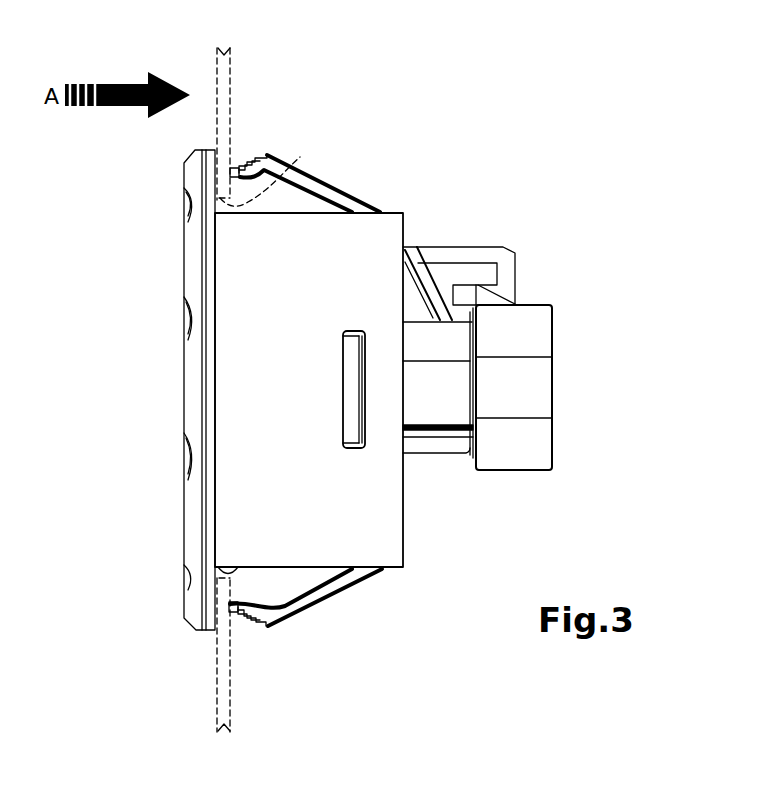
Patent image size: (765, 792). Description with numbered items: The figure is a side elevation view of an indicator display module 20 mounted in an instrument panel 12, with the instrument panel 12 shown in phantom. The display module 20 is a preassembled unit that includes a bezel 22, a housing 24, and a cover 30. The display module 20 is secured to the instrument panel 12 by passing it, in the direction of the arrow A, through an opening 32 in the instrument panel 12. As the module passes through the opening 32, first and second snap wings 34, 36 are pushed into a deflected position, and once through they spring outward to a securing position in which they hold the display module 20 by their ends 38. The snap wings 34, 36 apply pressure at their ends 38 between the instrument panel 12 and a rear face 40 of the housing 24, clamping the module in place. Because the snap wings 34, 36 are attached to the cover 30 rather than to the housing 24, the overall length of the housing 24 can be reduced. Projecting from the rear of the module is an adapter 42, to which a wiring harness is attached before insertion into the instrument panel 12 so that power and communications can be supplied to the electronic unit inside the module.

The instrument panel 12 is at (220, 86).
The indicator display module 20 is at (515, 206).
The bezel 22 is at (185, 184).
The housing 24 is at (392, 540).
The cover 30 is at (466, 476).
The opening 32 is at (300, 157).
The first snap wing 34 is at (338, 197).
The second snap wing 36 is at (327, 590).
The ends 38 is at (247, 156).
The rear face 40 is at (247, 567).
The adapter 42 is at (556, 441).